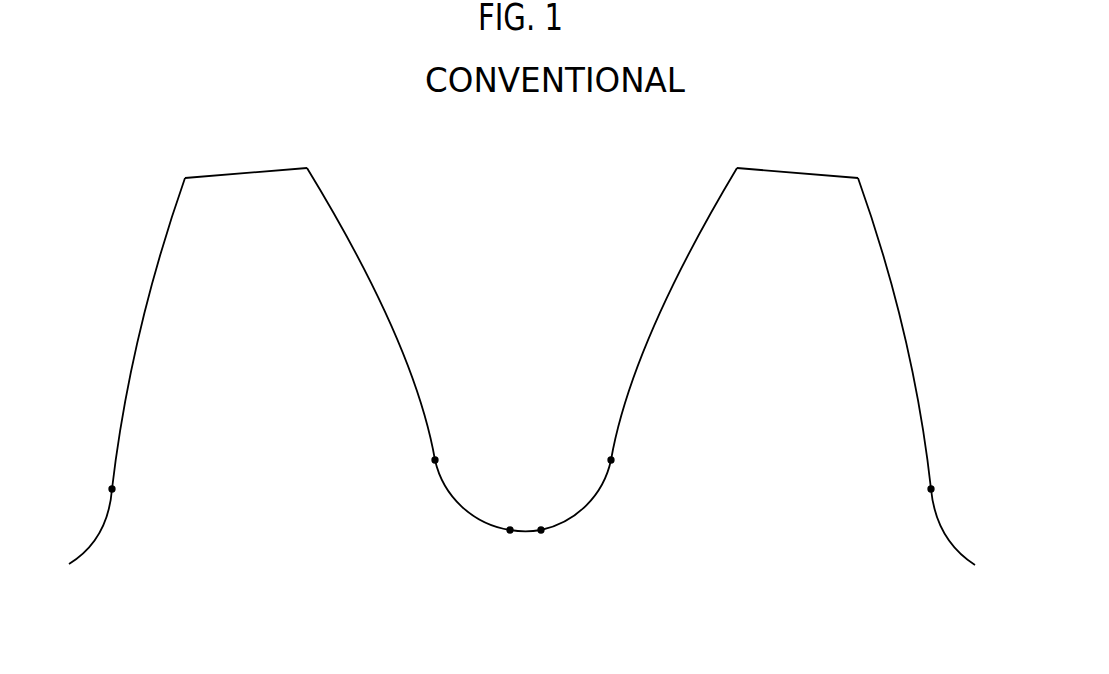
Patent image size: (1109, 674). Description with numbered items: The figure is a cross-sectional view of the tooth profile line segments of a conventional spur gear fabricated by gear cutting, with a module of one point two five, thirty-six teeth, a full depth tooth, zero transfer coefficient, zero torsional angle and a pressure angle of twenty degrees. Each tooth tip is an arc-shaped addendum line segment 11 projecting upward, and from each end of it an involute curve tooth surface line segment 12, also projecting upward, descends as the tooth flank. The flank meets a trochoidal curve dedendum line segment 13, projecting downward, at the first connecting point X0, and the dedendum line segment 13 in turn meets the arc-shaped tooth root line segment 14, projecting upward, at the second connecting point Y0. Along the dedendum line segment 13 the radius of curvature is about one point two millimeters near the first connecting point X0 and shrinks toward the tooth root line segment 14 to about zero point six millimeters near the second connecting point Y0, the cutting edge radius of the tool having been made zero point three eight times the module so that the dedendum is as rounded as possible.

The addendum line segment 11 is at (258, 172).
The tooth surface line segment 12 is at (142, 314).
The dedendum line segment 13 is at (455, 506).
The tooth root line segment 14 is at (522, 532).
The first connecting point X0 is at (112, 489).
The second connecting point Y0 is at (510, 530).